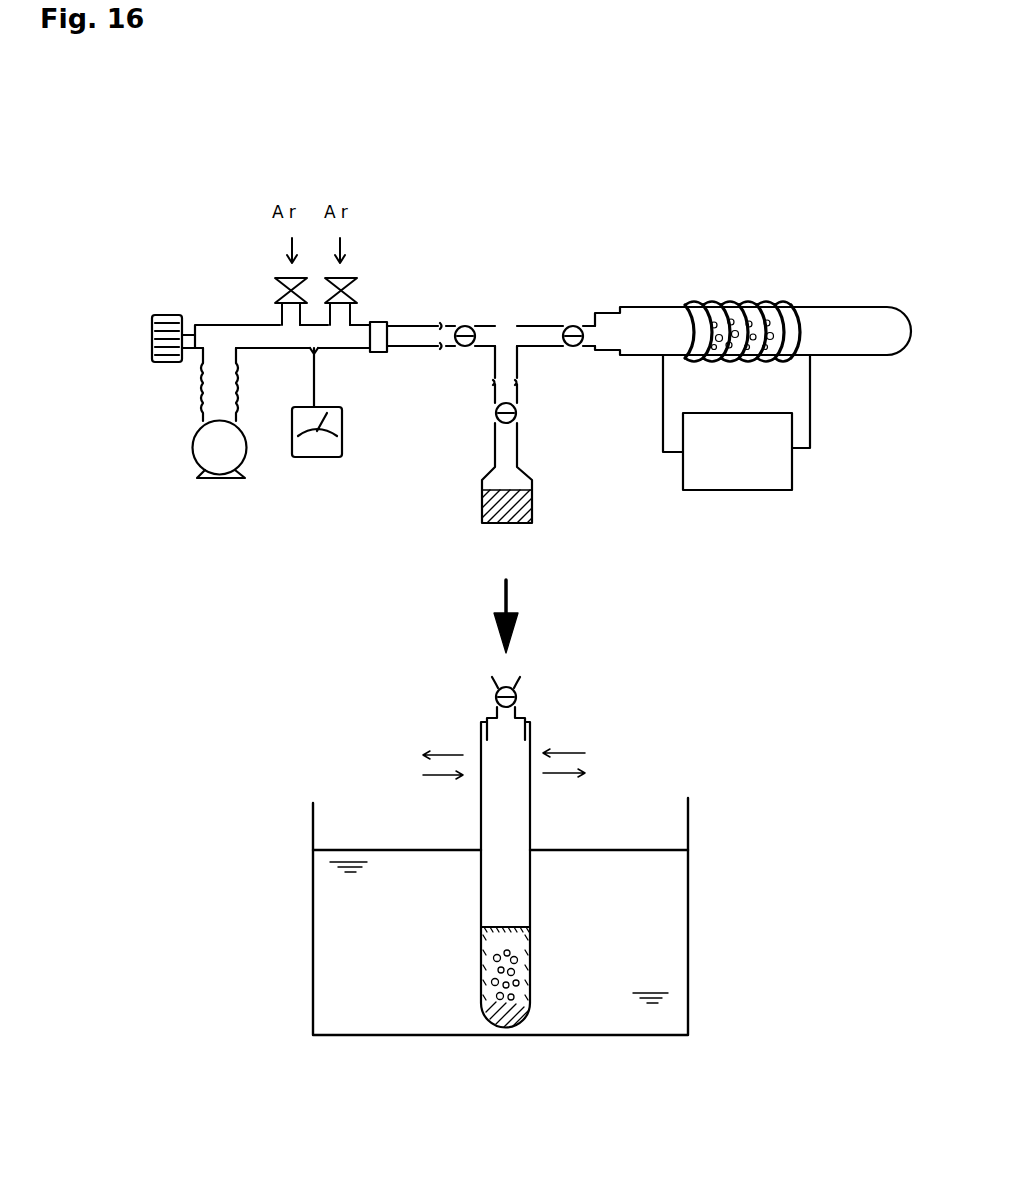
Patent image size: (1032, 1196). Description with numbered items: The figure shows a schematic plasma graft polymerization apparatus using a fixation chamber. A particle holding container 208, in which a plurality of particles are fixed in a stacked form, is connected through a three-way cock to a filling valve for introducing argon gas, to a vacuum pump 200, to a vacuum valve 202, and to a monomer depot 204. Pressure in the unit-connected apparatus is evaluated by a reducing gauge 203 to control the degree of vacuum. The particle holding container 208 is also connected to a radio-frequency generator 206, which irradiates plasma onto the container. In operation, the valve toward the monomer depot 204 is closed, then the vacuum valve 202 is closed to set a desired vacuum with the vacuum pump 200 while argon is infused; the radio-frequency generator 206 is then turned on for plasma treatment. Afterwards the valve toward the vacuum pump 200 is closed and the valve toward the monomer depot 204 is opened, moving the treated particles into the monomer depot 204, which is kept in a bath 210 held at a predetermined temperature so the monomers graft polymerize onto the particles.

The vacuum pump 200 is at (189, 462).
The vacuum valve 202 is at (140, 347).
The reducing gauge 203 is at (345, 430).
The monomer depot 204 is at (537, 509).
The radio-frequency generator 206 is at (724, 495).
The particle holding container 208 is at (703, 295).
The bath 210 is at (692, 938).